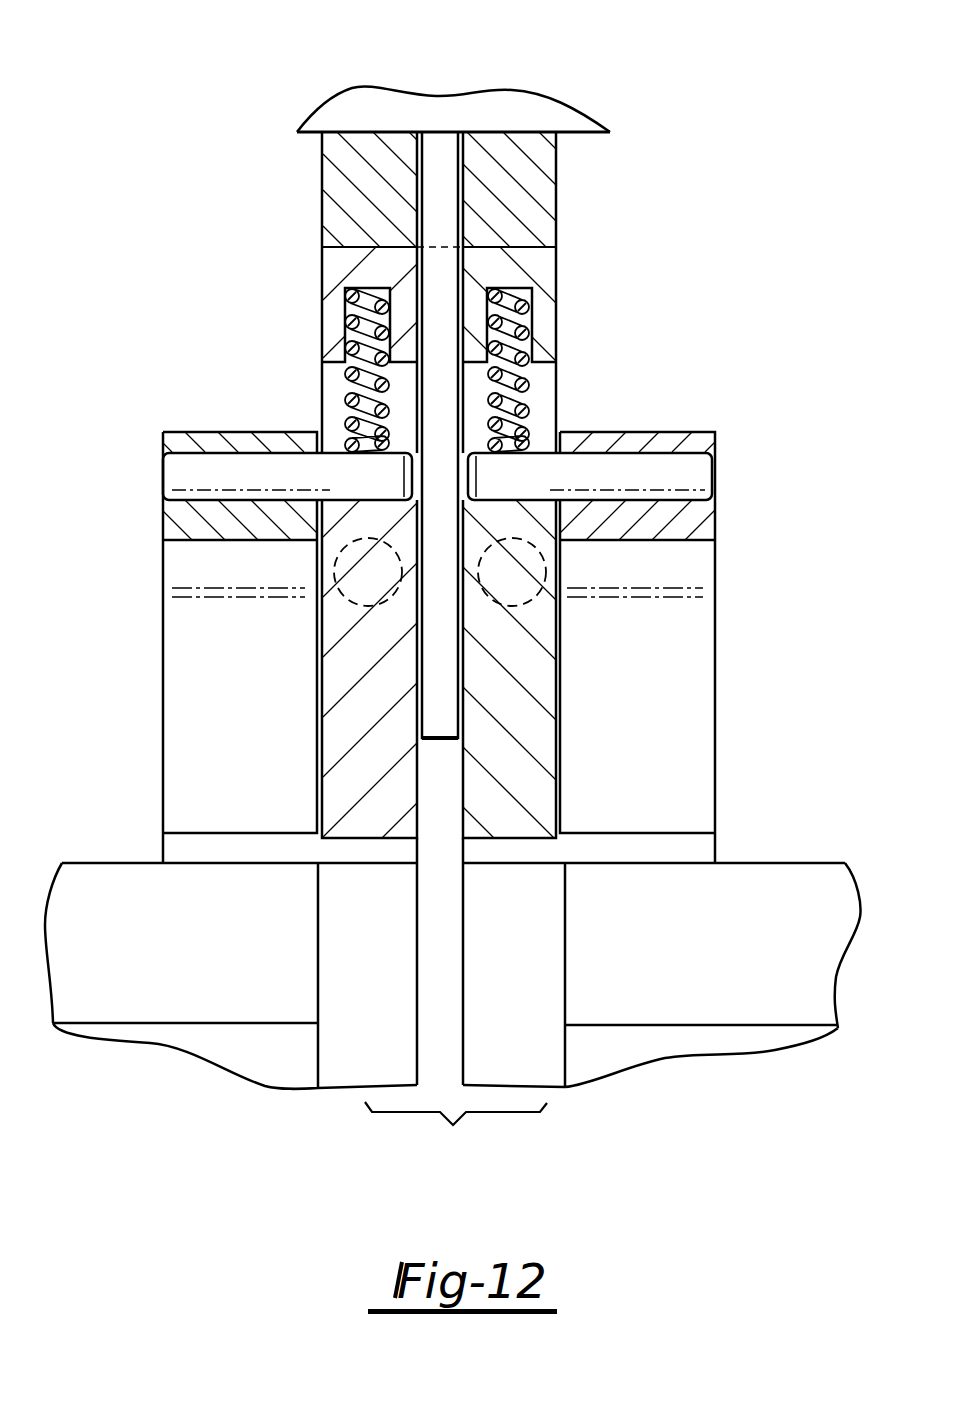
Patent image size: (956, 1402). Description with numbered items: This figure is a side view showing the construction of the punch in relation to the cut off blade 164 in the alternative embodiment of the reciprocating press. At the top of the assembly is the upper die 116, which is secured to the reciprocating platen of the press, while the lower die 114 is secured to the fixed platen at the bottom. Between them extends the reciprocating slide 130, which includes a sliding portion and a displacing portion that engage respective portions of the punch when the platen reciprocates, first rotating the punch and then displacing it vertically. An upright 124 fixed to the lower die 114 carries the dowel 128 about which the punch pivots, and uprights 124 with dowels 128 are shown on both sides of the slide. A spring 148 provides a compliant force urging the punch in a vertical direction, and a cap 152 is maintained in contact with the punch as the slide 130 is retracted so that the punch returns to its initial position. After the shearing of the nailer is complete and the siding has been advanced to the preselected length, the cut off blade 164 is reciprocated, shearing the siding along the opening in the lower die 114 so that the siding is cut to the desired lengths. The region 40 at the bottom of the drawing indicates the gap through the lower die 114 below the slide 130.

The upper die 116 is at (495, 108).
The reciprocating slide 130 is at (557, 200).
The cut off blade 164 is at (443, 724).
The spring 148 is at (347, 372).
The dowel 128 is at (202, 478).
The upright 124 is at (264, 763).
The cap 152 is at (343, 598).
The lower die 114 is at (212, 966).
The slot 40 is at (456, 1134).